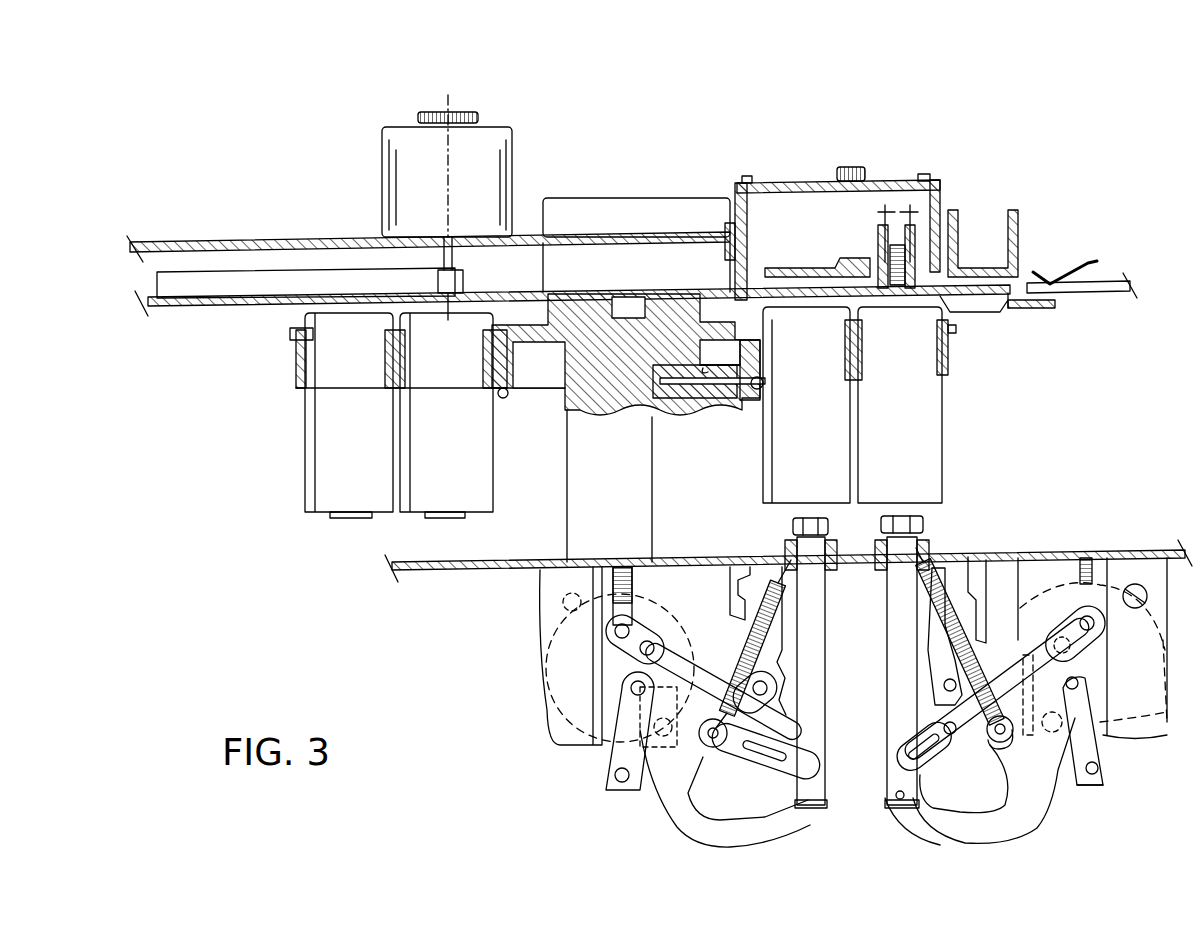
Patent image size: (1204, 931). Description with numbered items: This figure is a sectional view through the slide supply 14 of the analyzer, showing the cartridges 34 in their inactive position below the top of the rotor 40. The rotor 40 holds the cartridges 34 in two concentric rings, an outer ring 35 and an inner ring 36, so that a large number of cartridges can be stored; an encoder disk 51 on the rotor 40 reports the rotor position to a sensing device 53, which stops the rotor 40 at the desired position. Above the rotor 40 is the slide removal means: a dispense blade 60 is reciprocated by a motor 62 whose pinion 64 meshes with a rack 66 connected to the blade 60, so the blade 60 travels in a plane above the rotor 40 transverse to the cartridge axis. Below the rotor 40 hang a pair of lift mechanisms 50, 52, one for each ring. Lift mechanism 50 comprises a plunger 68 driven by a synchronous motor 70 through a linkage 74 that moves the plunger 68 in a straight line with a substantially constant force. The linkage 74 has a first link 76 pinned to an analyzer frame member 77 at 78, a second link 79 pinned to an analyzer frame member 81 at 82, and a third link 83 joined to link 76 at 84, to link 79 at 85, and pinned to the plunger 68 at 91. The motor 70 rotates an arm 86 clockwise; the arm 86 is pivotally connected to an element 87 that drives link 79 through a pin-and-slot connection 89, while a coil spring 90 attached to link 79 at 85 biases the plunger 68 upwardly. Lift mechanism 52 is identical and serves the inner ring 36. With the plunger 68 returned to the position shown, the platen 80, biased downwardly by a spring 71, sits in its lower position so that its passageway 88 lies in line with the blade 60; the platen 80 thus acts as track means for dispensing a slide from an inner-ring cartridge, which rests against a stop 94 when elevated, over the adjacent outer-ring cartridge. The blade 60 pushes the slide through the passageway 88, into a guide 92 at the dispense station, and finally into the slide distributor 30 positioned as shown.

The slide supply 14 is at (1014, 193).
The slide distributor 30 is at (1107, 264).
The cartridge 34 is at (310, 470).
The outer ring 35 is at (862, 498).
The inner ring 36 is at (762, 490).
The rotor 40 is at (750, 387).
The lift mechanism 50 is at (1036, 572).
The encoder disk 51 is at (735, 415).
The lift mechanism 52 is at (670, 580).
The sensing device 53 is at (695, 397).
The dispense blade 60 is at (543, 290).
The motor 62 is at (516, 150).
The pinion 64 is at (463, 282).
The rack 66 is at (310, 272).
The plunger 68 is at (905, 548).
The synchronous motor 70 is at (1160, 680).
The spring 71 is at (935, 228).
The linkage 74 is at (1033, 818).
The first link 76 is at (1100, 750).
The analyzer frame member 77 is at (1100, 728).
The pin connection 78 is at (1100, 775).
The second link 79 is at (935, 695).
The platen 80 is at (868, 238).
The analyzer frame member 81 is at (972, 605).
The pin connection 82 is at (944, 685).
The third link 83 is at (975, 832).
The joint 84 is at (1092, 680).
The joint 85 is at (1002, 746).
The arm 86 is at (1147, 600).
The element 87 is at (1012, 672).
The passageway 88 is at (865, 262).
The pin-and-slot connection 89 is at (930, 726).
The coil spring 90 is at (930, 580).
The pin connection 91 is at (900, 800).
The guide 92 is at (1018, 275).
The stop 94 is at (800, 268).